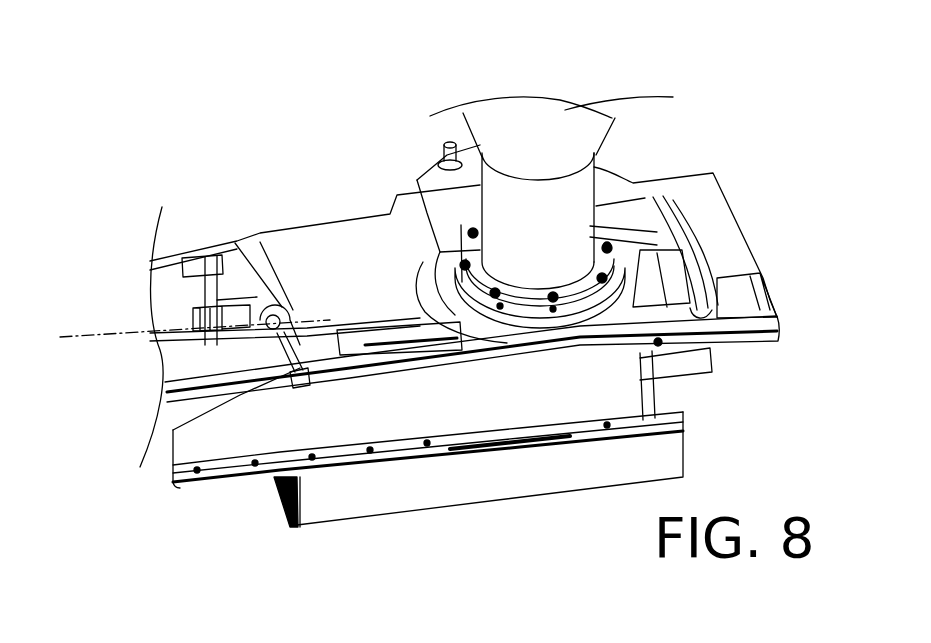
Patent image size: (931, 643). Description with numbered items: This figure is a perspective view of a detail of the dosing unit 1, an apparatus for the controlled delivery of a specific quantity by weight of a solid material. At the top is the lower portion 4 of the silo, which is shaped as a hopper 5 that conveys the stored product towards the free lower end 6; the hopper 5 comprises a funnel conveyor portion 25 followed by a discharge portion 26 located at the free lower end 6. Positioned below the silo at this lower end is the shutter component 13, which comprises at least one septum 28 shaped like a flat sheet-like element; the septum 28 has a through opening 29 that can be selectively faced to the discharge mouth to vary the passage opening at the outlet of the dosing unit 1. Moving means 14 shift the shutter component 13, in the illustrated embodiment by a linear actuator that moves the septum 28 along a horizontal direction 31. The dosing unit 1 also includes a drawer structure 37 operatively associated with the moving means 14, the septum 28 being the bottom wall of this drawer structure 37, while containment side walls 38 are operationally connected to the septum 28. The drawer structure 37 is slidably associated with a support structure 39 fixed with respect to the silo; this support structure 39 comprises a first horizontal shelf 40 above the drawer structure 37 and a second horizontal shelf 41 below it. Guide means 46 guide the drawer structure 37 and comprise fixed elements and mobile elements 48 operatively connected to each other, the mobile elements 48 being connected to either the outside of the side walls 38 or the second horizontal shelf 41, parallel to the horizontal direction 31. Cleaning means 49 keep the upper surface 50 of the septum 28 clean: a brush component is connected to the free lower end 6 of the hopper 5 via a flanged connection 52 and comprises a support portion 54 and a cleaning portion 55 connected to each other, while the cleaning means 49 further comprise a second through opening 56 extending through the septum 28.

The dosing unit 1 is at (105, 97).
The lower portion 4 is at (412, 133).
The hopper 5 is at (590, 213).
The free lower end 6 is at (640, 200).
The shutter component 13 is at (258, 422).
The moving means 14 is at (127, 233).
The funnel conveyor portion 25 is at (490, 110).
The discharge portion 26 is at (537, 187).
The septum 28 is at (420, 267).
The through opening 29 is at (446, 310).
The horizontal direction 31 is at (62, 337).
The drawer structure 37 is at (762, 369).
The containment side walls 38 is at (682, 255).
The support structure 39 is at (176, 372).
The first horizontal shelf 40 is at (283, 240).
The second horizontal shelf 41 is at (773, 313).
The guide means 46 is at (508, 320).
The mobile elements 48 is at (308, 405).
The cleaning means 49 is at (585, 345).
The upper surface 50 is at (158, 412).
The flanged connection 52 is at (606, 318).
The support portion 54 is at (540, 312).
The cleaning portion 55 is at (417, 400).
The second through opening 56 is at (653, 262).